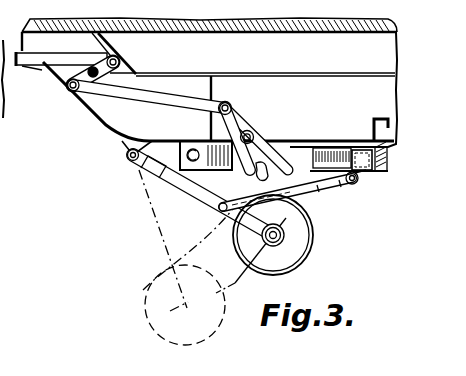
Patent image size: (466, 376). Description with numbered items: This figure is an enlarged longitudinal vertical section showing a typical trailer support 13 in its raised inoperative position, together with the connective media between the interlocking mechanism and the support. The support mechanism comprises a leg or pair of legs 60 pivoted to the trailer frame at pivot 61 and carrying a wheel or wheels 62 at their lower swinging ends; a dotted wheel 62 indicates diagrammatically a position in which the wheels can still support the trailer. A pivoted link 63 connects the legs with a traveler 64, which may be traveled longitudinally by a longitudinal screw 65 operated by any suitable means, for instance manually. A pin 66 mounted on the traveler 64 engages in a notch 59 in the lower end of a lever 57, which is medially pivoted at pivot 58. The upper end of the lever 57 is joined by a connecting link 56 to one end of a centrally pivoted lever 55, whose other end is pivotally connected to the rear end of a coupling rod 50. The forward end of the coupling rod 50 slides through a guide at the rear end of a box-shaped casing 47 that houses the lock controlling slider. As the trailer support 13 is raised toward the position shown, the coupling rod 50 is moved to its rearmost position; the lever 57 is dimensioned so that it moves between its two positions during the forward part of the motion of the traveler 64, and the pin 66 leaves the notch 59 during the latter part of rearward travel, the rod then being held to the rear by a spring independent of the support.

The trailer support 13 is at (197, 207).
The box-shaped casing 47 is at (286, 150).
The coupling rod 50 is at (43, 62).
The centrally pivoted lever 55 is at (133, 73).
The connecting link 56 is at (134, 96).
The lever 57 is at (239, 116).
The pivot 58 is at (252, 134).
The notch 59 is at (256, 176).
The leg 60 is at (157, 190).
The pivot 61 is at (128, 157).
The wheel 62 is at (314, 240).
The pivoted link 63 is at (314, 189).
The traveler 64 is at (362, 170).
The longitudinal screw 65 is at (338, 147).
The pin 66 is at (358, 184).